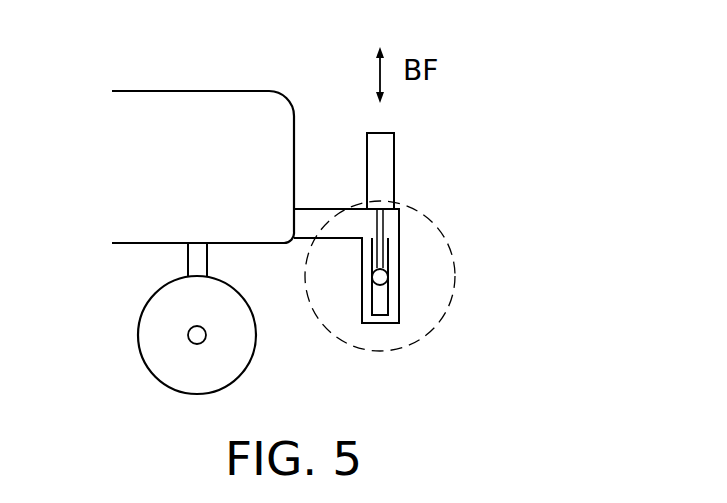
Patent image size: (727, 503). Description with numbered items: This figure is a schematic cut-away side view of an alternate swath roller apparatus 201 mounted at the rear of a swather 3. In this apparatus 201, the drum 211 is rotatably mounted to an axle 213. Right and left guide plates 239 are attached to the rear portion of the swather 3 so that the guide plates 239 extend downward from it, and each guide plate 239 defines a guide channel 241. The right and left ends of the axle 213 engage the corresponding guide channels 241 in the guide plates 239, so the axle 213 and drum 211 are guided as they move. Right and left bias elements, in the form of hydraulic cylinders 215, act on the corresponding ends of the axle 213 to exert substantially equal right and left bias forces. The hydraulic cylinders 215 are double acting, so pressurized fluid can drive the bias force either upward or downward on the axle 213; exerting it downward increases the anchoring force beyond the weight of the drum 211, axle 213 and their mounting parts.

The swather 3 is at (210, 91).
The swath roller apparatus 201 is at (512, 125).
The drum 211 is at (445, 240).
The axle 213 is at (378, 285).
The hydraulic cylinders 215 is at (394, 162).
The guide plates 239 is at (388, 272).
The guide channel 241 is at (375, 255).